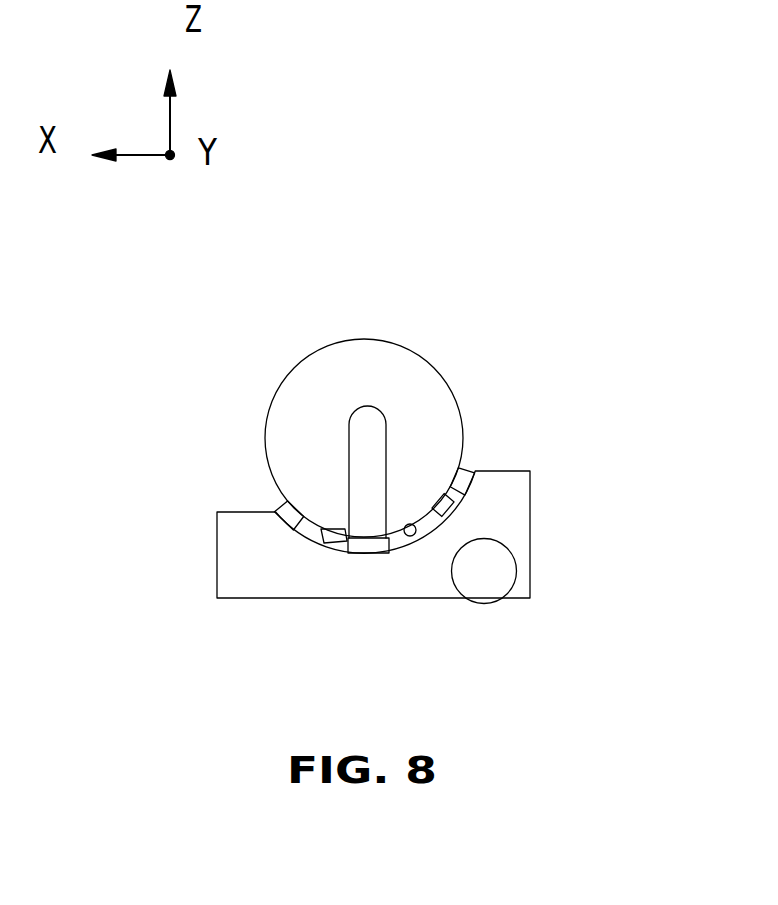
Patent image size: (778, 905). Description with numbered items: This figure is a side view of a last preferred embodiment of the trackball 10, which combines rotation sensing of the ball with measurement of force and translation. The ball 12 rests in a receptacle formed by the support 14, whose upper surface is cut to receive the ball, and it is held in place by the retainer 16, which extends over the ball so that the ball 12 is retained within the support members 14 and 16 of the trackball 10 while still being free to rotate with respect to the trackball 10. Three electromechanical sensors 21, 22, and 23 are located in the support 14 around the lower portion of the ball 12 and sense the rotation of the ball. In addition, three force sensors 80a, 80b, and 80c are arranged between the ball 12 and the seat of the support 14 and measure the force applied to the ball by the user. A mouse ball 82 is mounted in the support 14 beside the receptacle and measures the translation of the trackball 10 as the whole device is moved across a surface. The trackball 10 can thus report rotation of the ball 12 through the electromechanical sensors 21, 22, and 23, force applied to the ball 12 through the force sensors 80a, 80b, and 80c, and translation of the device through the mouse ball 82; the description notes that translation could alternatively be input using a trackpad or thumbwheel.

The trackball 10 is at (500, 306).
The ball 12 is at (310, 393).
The support 14 is at (277, 568).
The retainer 16 is at (363, 448).
The electromechanical sensor 21 is at (328, 540).
The electromechanical sensor 22 is at (408, 536).
The electromechanical sensor 23 is at (442, 515).
The force sensor 80a is at (285, 513).
The force sensor 80b is at (362, 547).
The force sensor 80c is at (460, 475).
The mouse ball 82 is at (477, 570).